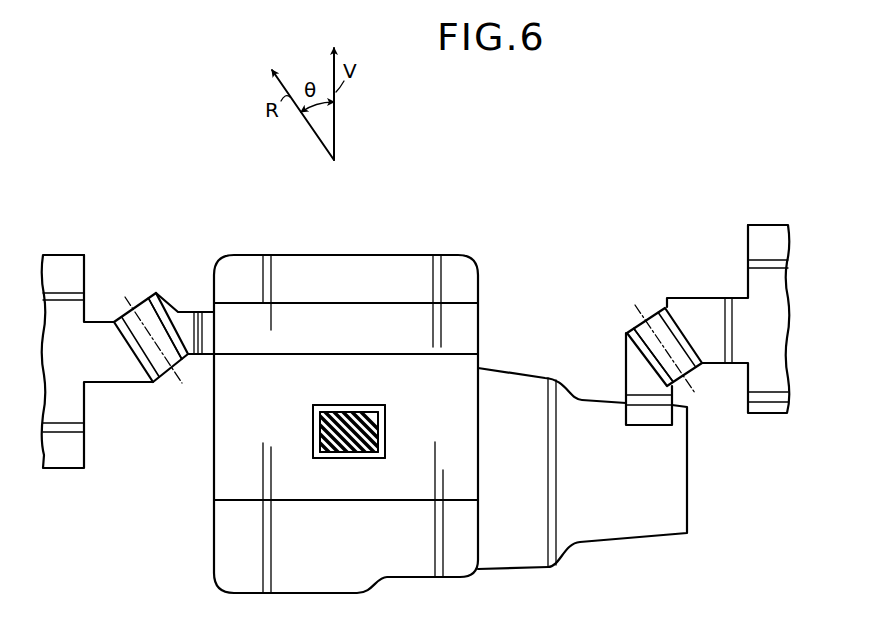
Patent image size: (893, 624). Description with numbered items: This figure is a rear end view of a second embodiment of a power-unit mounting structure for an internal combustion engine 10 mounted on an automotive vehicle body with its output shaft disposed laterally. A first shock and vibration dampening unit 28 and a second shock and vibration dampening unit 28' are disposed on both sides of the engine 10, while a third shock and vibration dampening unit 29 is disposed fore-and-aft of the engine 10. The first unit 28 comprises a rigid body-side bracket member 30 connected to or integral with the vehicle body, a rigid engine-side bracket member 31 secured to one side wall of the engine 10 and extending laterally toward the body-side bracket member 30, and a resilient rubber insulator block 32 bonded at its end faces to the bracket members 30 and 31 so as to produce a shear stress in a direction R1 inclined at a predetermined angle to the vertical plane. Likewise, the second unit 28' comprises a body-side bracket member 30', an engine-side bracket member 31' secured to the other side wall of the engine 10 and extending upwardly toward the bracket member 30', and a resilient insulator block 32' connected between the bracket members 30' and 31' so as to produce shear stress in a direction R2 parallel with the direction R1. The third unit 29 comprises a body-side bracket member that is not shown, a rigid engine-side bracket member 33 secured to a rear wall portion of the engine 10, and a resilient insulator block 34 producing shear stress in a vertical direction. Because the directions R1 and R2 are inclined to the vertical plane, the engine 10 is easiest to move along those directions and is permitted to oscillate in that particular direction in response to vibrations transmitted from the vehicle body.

The internal combustion engine 10 is at (377, 253).
The first shock and vibration dampening unit 28 is at (151, 300).
The second shock and vibration dampening unit 28' is at (664, 304).
The third shock and vibration dampening unit 29 is at (398, 407).
The body-side bracket member 30 is at (97, 361).
The body-side bracket member 30' is at (728, 319).
The engine-side bracket member 31 is at (185, 314).
The engine-side bracket member 31' is at (630, 379).
The resilient insulator block 32 is at (169, 355).
The resilient insulator block 32' is at (687, 369).
The engine-side bracket member 33 is at (385, 433).
The resilient insulator block 34 is at (321, 432).
The shear stress direction R1 is at (152, 326).
The shear stress direction R2 is at (649, 344).